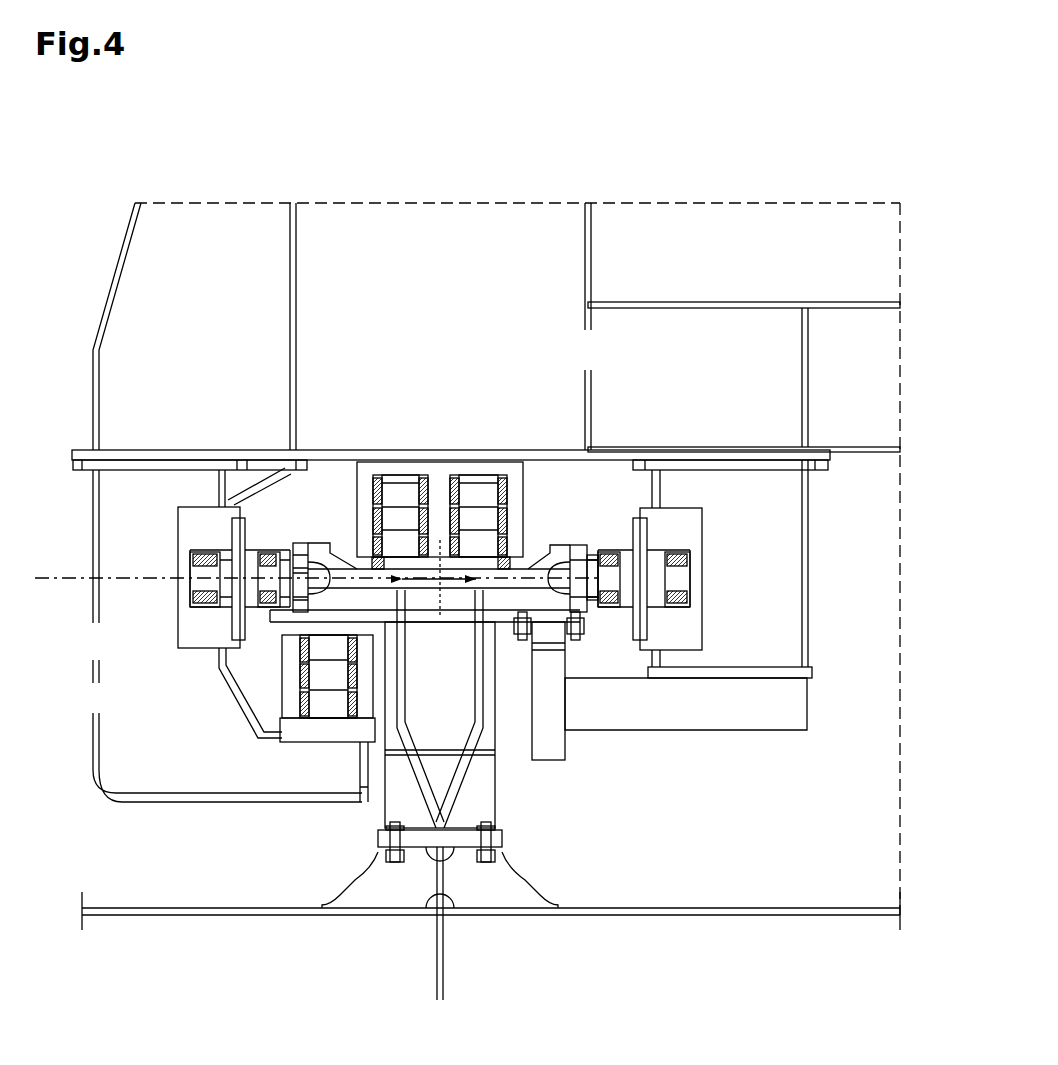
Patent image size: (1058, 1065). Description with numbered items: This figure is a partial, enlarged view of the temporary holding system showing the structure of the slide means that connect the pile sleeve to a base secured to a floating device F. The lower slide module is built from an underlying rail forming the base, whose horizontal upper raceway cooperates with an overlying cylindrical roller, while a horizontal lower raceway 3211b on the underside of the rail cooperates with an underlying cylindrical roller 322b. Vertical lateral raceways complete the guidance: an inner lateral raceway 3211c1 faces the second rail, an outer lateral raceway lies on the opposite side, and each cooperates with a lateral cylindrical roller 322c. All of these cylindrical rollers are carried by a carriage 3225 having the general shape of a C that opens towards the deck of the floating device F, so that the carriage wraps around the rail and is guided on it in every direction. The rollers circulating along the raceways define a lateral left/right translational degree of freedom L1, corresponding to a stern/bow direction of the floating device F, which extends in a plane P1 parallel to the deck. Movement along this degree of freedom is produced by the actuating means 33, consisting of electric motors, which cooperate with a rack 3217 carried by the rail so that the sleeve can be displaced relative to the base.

The lateral left/right translational degree of freedom L1 is at (448, 592).
The lateral cylindrical roller 322c is at (216, 590).
The inner lateral raceway 3211c1 is at (596, 568).
The carriage 3225 is at (757, 527).
The actuating means 33 is at (713, 737).
The rack 3217 is at (548, 646).
The underlying cylindrical roller 322b is at (333, 706).
The lower raceway 3211b is at (327, 638).
The floating device F is at (150, 919).
The first plane P1 is at (66, 575).